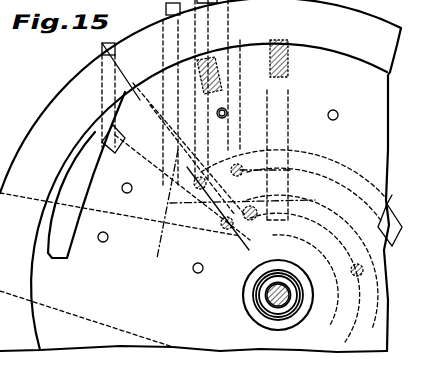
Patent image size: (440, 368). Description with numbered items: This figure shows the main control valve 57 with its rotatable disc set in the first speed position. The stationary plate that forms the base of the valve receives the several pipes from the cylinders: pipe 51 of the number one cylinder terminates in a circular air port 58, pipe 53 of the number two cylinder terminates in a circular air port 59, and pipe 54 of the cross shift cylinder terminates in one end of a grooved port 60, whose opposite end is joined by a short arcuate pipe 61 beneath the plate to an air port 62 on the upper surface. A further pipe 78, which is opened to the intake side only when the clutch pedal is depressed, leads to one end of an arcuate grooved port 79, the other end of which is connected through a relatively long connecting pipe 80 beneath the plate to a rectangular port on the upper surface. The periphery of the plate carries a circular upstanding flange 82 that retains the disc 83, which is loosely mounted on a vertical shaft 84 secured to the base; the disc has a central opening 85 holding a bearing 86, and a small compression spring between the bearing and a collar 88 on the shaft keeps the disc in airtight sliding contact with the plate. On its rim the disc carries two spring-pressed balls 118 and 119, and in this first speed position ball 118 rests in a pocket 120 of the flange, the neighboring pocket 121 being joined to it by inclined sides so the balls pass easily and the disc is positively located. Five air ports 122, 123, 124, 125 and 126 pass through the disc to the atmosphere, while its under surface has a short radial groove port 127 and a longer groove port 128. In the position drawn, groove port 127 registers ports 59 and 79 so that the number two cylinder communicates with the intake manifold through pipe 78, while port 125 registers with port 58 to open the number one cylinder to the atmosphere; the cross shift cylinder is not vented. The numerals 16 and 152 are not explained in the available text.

The band 16 is at (95, 47).
The pipe 51 is at (235, 18).
The pipe 53 is at (166, 13).
The pipe 54 is at (130, 93).
The main control valve 57 is at (26, 142).
The circular air port 58 is at (216, 111).
The circular air port 59 is at (176, 161).
The grooved port 60 is at (237, 203).
The arcuate pipe 61 is at (350, 219).
The air port 62 is at (359, 294).
The pipe 78 is at (224, 130).
The arcuate grooved port 79 is at (222, 185).
The connecting pipe 80 is at (397, 214).
The flange 82 is at (86, 319).
The disc 83 is at (109, 302).
The shaft 84 is at (270, 291).
The central opening 85 is at (290, 320).
The bearing 86 is at (267, 320).
The collar 88 is at (264, 302).
The spring-pressed ball 118 is at (230, 44).
The spring-pressed ball 119 is at (318, 45).
The pocket 120 is at (188, 56).
The pocket 121 is at (100, 106).
The air port 122 is at (195, 272).
The air port 123 is at (100, 242).
The air port 124 is at (128, 193).
The air port 125 is at (228, 110).
The air port 126 is at (337, 120).
The groove port 127 is at (159, 209).
The groove port 128 is at (289, 109).
The curved slot 152 is at (50, 230).